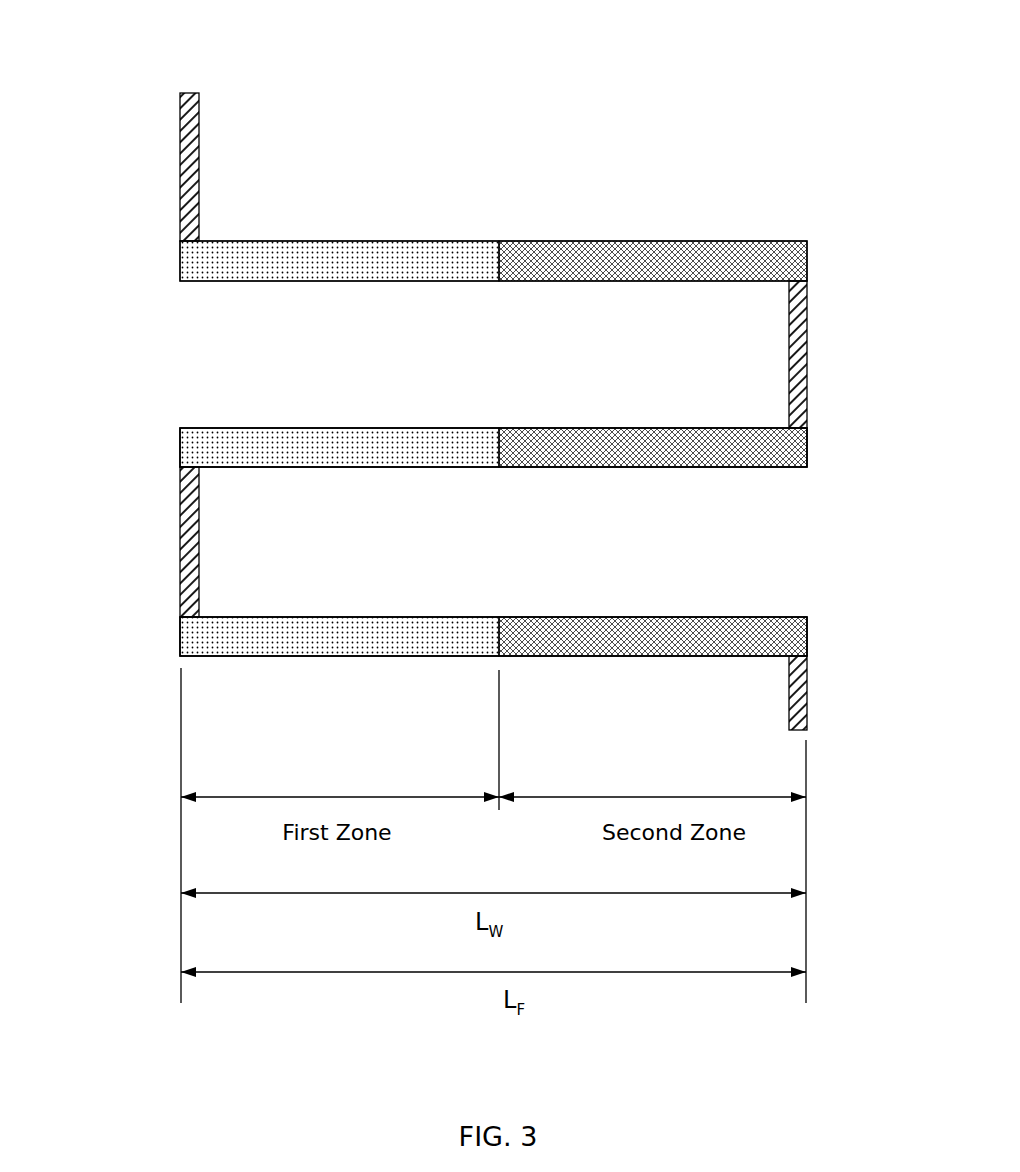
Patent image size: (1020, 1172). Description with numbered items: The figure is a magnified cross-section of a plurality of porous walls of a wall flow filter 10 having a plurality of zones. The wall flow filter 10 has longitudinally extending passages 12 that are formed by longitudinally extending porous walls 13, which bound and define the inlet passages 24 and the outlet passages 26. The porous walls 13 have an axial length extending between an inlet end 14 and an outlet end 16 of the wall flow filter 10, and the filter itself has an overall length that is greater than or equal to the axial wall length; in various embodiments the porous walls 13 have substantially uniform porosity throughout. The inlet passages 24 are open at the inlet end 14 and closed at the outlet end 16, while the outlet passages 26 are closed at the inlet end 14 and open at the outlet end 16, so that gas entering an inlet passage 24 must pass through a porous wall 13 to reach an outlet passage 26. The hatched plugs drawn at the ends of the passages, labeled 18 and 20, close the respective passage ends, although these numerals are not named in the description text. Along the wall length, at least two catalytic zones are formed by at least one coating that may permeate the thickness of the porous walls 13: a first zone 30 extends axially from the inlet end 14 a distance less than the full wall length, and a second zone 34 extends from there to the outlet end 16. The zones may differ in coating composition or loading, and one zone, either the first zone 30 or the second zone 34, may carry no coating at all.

The wall flow filter 10 is at (293, 70).
The longitudinally extending passages 12 is at (214, 385).
The porous walls 13 is at (637, 265).
The inlet end 14 is at (78, 319).
The outlet end 16 is at (855, 517).
The first side wall 18 is at (180, 157).
The second side wall 20 is at (807, 347).
The inlet passages 24 is at (225, 517).
The outlet passages 26 is at (230, 345).
The first zone 30 is at (302, 258).
The second zone 34 is at (683, 258).